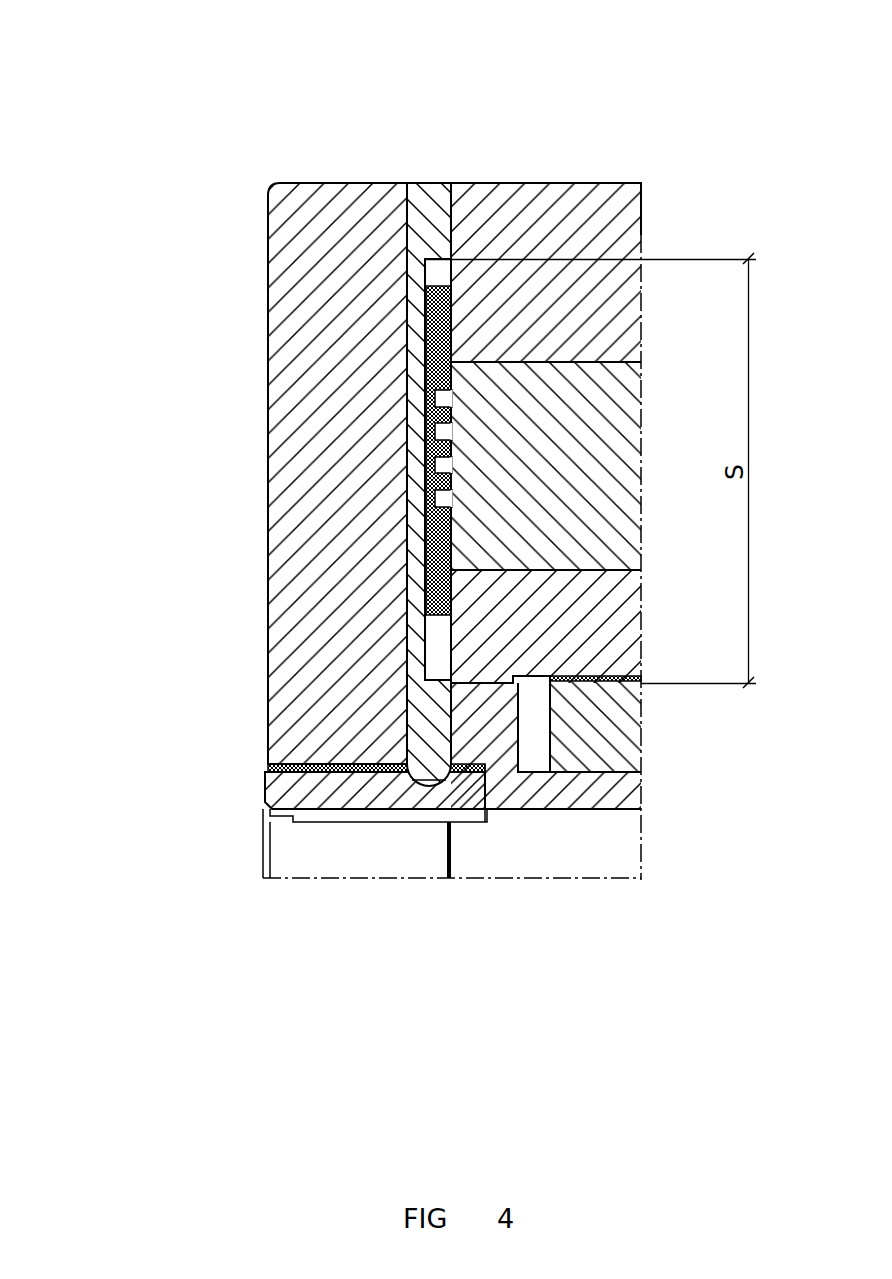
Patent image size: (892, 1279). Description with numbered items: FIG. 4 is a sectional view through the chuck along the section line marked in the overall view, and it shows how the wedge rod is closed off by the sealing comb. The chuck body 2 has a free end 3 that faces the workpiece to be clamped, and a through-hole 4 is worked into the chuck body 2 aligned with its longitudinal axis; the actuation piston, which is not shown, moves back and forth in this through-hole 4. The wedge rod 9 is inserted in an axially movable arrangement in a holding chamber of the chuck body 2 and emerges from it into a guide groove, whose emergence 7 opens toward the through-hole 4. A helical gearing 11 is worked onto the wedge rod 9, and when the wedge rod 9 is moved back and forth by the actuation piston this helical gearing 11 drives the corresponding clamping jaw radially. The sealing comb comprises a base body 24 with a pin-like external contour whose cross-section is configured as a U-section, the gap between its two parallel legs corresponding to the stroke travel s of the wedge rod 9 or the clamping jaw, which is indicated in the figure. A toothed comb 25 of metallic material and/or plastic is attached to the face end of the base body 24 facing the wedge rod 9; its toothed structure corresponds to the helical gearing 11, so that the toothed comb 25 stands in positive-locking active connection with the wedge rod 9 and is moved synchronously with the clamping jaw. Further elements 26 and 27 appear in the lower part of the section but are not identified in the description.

The chuck body 2 is at (318, 183).
The free end 3 is at (268, 265).
The through-hole 4 is at (548, 810).
The emergence of the guide groove 7 is at (350, 810).
The wedge rod 9 is at (585, 357).
The helical gearing 11 is at (450, 400).
The base body 24 is at (428, 182).
The toothed comb 25 is at (455, 262).
The thin sealing strip 26 is at (300, 764).
The bottom plate 27 is at (266, 785).